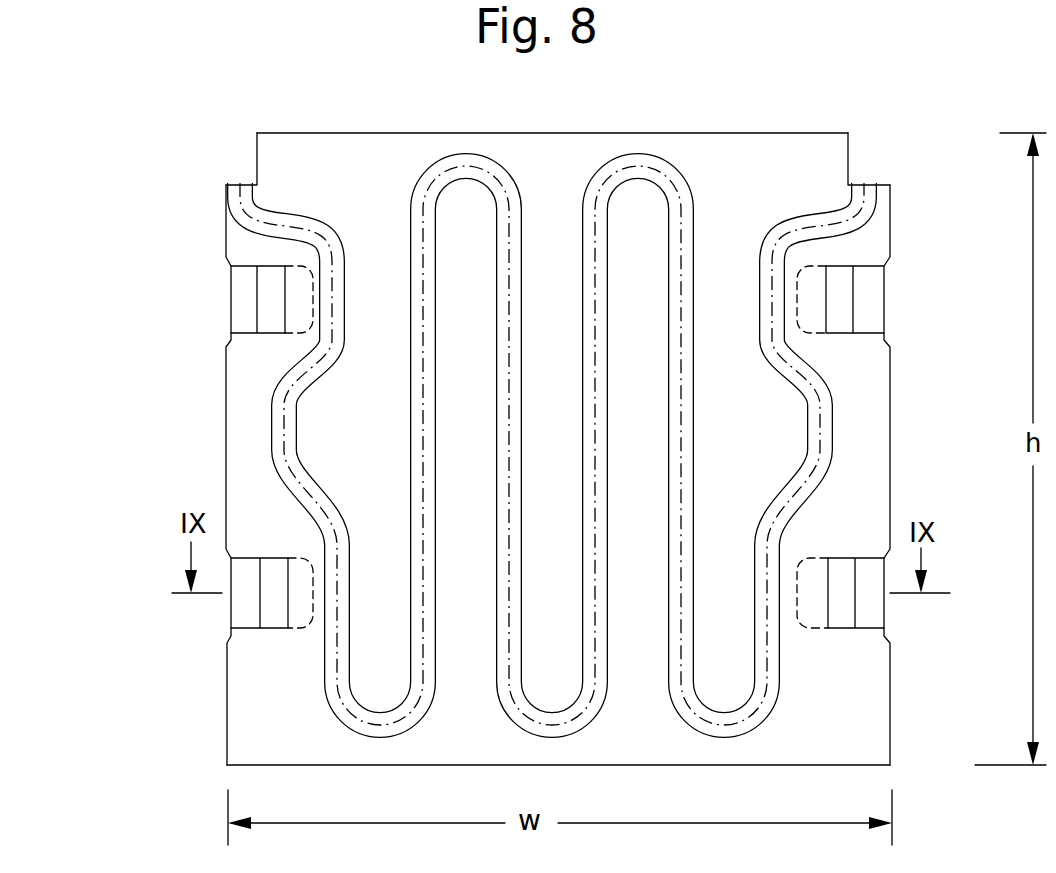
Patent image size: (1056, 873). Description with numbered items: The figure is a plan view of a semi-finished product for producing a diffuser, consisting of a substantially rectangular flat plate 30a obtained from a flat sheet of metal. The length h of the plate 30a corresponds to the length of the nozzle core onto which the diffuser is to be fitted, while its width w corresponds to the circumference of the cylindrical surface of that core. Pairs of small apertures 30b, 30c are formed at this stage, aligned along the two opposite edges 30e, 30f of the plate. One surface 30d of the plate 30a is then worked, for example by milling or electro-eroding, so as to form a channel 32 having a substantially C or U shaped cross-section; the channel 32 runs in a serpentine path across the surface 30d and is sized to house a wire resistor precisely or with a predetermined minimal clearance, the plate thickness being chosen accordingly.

The flat plate 30a is at (367, 122).
The small apertures 30b is at (268, 294).
The small apertures 30c is at (840, 300).
The surface of the plate 30d is at (737, 138).
The edge of the plate 30e is at (222, 462).
The edge of the plate 30f is at (890, 423).
The channel 32 is at (275, 412).